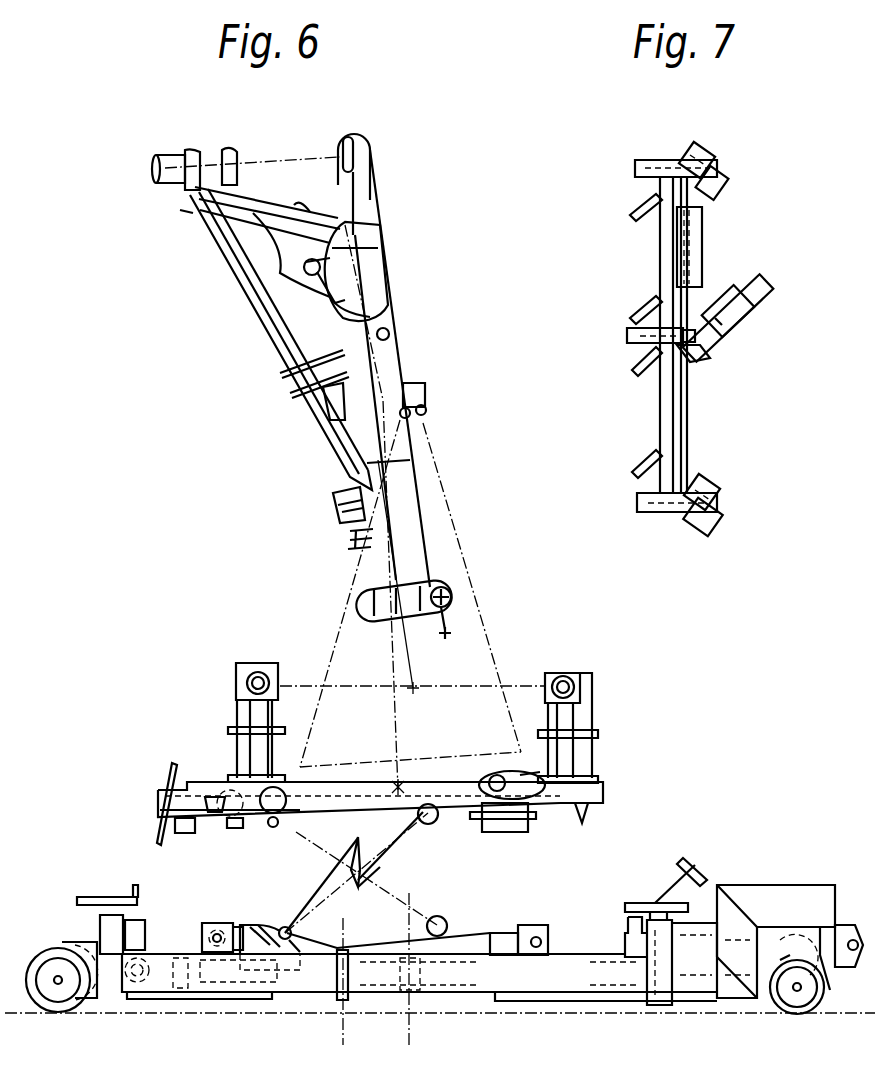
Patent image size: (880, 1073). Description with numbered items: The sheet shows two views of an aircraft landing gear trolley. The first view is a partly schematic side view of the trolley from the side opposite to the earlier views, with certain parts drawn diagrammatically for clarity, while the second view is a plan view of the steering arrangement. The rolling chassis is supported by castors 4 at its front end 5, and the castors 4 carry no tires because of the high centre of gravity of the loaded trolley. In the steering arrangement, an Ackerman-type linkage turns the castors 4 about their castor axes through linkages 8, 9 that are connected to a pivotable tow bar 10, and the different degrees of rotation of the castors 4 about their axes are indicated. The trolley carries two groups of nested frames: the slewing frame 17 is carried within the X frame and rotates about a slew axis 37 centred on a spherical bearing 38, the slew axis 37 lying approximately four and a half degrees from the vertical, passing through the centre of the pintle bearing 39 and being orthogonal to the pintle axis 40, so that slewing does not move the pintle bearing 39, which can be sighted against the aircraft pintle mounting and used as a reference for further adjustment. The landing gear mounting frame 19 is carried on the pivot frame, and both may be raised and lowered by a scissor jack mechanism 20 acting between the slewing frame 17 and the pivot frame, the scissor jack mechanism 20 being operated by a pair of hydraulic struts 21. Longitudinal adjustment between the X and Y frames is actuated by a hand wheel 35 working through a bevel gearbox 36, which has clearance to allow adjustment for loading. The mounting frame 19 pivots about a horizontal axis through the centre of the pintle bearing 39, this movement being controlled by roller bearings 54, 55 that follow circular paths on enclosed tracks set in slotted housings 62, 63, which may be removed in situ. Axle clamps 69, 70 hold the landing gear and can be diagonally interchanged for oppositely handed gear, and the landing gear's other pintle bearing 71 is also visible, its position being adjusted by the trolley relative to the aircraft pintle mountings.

In FIG. 7, the castors 4 is at (698, 147).
In FIG. 6, the front end 5 is at (780, 885).
In FIG. 7, the linkage 8 is at (692, 247).
In FIG. 7, the linkage 9 is at (689, 422).
In FIG. 7, the tow bar 10 is at (762, 285).
In FIG. 6, the slewing frame 17 is at (228, 922).
In FIG. 6, the landing gear mounting frame 19 is at (605, 797).
In FIG. 6, the scissor jack mechanism 20 is at (380, 867).
In FIG. 6, the hydraulic struts 21 is at (320, 890).
In FIG. 6, the hand wheel 35 is at (702, 872).
In FIG. 6, the bevel gearbox 36 is at (597, 955).
In FIG. 6, the slew axis 37 is at (365, 287).
In FIG. 6, the spherical bearing 38 is at (420, 914).
In FIG. 6, the pintle bearing 39 is at (372, 148).
In FIG. 6, the pintle axis 40 is at (287, 156).
In FIG. 6, the roller bearing 54 is at (216, 815).
In FIG. 6, the roller bearing 55 is at (498, 762).
In FIG. 6, the slotted housing 62 is at (212, 780).
In FIG. 6, the slotted housing 63 is at (522, 797).
In FIG. 6, the axle clamp 69 is at (240, 700).
In FIG. 6, the axle clamp 70 is at (580, 713).
In FIG. 6, the pintle bearing 71 is at (191, 150).